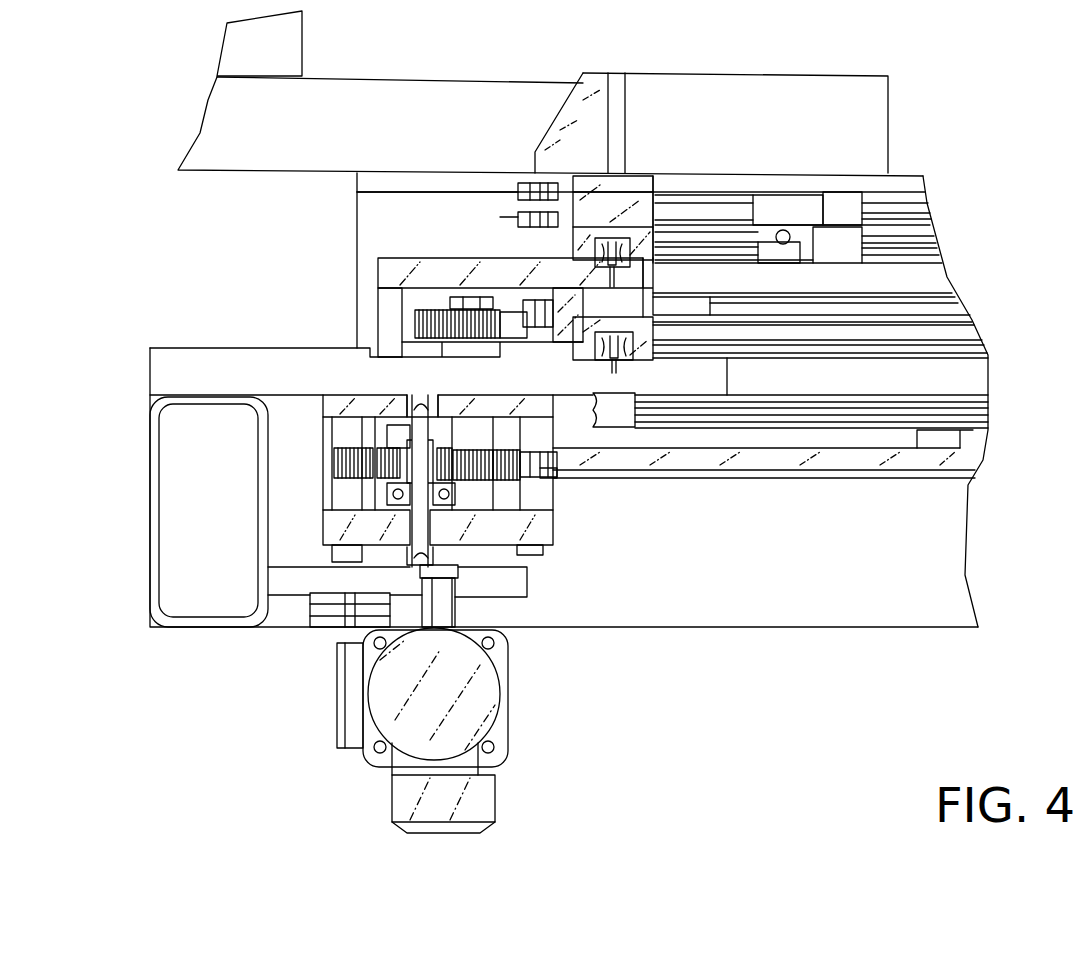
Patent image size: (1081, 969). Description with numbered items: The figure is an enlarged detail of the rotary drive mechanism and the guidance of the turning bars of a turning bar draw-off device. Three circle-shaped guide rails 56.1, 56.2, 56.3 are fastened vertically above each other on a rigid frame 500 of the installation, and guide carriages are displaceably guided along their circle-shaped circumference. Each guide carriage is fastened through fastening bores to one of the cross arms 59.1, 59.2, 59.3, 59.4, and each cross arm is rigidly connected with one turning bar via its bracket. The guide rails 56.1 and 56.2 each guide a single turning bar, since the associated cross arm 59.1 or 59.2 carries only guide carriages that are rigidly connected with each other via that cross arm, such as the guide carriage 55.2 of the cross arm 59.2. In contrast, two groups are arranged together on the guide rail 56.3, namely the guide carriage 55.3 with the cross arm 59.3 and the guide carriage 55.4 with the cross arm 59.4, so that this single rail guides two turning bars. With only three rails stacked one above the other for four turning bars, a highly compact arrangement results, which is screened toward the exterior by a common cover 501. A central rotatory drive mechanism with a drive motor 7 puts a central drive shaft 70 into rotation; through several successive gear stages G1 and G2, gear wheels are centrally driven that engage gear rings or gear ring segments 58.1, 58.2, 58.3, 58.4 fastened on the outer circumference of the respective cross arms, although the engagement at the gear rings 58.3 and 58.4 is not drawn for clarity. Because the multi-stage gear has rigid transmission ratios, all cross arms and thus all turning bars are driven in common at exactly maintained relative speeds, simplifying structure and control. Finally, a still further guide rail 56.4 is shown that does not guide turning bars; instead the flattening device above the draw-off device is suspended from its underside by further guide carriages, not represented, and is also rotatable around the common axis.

The common cover 501 is at (357, 238).
The rigid frame 500 is at (228, 358).
The gear ring segment 58.4 is at (358, 190).
The gear ring segment 58.3 is at (518, 217).
The guide carriage 55.3 is at (572, 250).
The cross arm 59.4 is at (915, 183).
The cross arm 59.3 is at (922, 215).
The guide rail 56.3 is at (932, 257).
The guide carriage 55.4 is at (843, 253).
The gear stage G2 is at (401, 321).
The gear ring segment 58.2 is at (528, 318).
The guide carriage 55.2 is at (642, 345).
The cross arm 59.2 is at (960, 300).
The guide rail 56.2 is at (973, 357).
The cross arm 59.1 is at (983, 460).
The guide rail 56.1 is at (614, 489).
The guide rail 56.4 is at (917, 448).
The gear stage G1 is at (320, 474).
The gear ring segment 58.1 is at (550, 490).
The central drive shaft 70 is at (453, 557).
The drive motor 7 is at (503, 755).